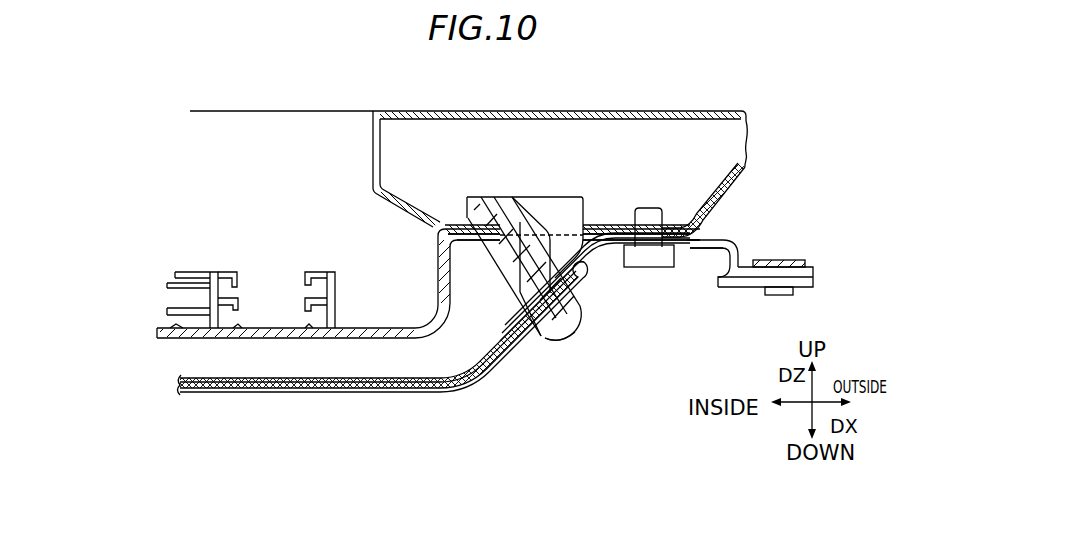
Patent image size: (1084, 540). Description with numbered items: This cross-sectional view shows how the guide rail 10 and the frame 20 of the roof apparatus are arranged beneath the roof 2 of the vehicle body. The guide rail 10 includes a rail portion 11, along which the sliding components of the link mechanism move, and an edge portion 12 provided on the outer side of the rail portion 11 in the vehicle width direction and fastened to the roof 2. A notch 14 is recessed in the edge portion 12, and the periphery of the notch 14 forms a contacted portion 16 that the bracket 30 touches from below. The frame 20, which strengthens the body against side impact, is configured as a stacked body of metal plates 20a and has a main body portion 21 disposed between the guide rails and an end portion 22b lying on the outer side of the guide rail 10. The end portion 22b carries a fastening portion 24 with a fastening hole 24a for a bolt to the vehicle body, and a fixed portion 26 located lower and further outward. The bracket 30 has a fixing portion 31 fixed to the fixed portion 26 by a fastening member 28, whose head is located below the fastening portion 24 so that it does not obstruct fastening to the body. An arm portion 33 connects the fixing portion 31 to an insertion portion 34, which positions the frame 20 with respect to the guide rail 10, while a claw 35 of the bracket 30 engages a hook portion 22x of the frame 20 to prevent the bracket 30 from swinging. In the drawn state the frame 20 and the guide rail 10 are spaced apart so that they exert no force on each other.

The roof 2 is at (768, 113).
The guide rail 10 is at (276, 303).
The rail portion 11 is at (303, 340).
The edge portion 12 is at (466, 254).
The notch 14 is at (480, 247).
The contacted portion 16 is at (489, 244).
The frame 20 is at (383, 361).
The metal plate 20a is at (515, 377).
The main body portion 21 is at (331, 394).
The end portion 22b is at (690, 279).
The hook portion 22x is at (545, 338).
The fastening portion 24 is at (689, 252).
The fastening hole 24a is at (660, 230).
The fixed portion 26 is at (817, 286).
The fastening member 28 is at (781, 261).
The bracket 30 is at (565, 182).
The fixing portion 31 is at (803, 264).
The arm portion 33 is at (712, 236).
The insertion portion 34 is at (510, 288).
The claw 35 is at (583, 322).